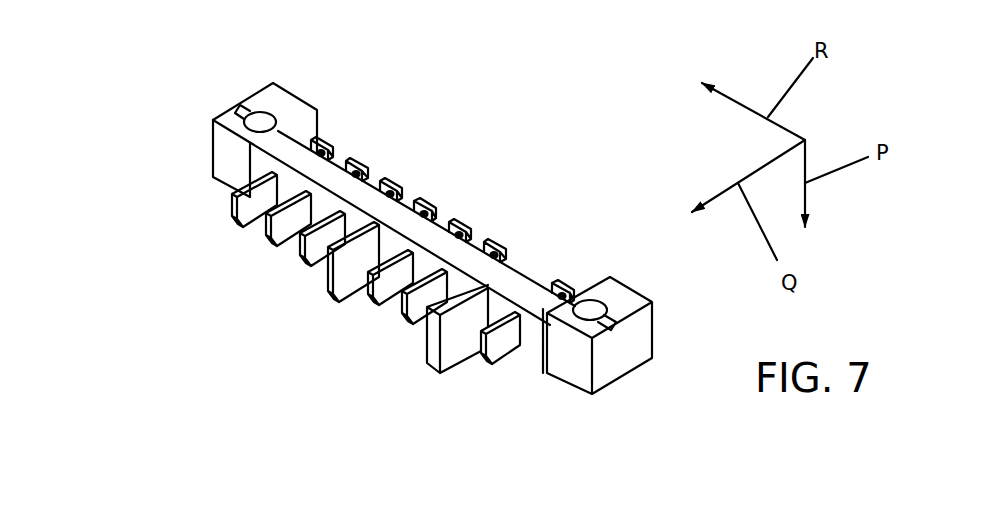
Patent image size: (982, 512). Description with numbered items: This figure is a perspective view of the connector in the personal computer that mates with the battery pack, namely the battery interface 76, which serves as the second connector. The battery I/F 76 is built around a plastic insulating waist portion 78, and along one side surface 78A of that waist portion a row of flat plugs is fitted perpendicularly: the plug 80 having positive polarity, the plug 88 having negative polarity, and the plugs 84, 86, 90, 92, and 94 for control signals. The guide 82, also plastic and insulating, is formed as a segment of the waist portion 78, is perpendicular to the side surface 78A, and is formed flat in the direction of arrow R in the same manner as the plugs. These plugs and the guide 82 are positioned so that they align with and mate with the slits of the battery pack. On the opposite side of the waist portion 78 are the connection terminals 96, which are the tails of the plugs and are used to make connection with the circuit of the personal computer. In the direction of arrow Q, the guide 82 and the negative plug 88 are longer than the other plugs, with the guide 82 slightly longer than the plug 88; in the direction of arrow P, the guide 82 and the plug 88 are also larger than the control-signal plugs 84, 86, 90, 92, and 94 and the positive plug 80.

The battery interface 76 is at (482, 167).
The waist portion 78 is at (228, 120).
The side surface of the waist portion 78A is at (356, 220).
The plug having positive polarity 80 is at (498, 370).
The guide 82 is at (432, 373).
The plug for control signals 84 is at (413, 325).
The plug for control signals 86 is at (377, 308).
The plug having negative polarity 88 is at (335, 307).
The plug for control signals 90 is at (312, 272).
The plug for control signals 92 is at (270, 250).
The plug for control signals 94 is at (233, 228).
The connection terminals 96 is at (333, 150).